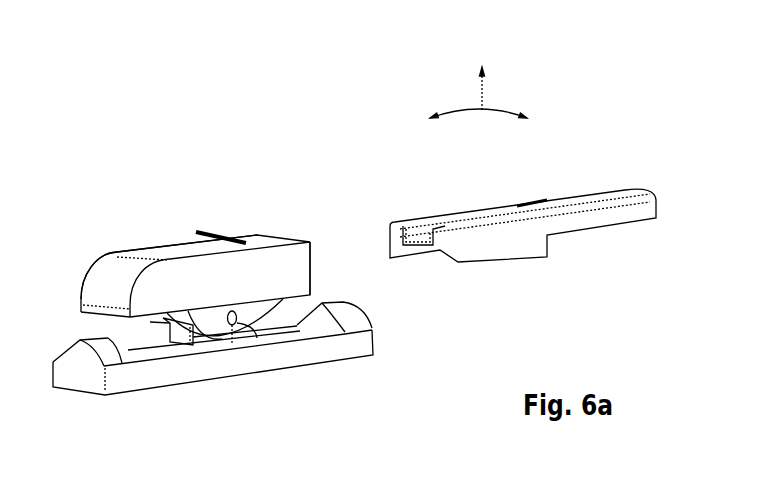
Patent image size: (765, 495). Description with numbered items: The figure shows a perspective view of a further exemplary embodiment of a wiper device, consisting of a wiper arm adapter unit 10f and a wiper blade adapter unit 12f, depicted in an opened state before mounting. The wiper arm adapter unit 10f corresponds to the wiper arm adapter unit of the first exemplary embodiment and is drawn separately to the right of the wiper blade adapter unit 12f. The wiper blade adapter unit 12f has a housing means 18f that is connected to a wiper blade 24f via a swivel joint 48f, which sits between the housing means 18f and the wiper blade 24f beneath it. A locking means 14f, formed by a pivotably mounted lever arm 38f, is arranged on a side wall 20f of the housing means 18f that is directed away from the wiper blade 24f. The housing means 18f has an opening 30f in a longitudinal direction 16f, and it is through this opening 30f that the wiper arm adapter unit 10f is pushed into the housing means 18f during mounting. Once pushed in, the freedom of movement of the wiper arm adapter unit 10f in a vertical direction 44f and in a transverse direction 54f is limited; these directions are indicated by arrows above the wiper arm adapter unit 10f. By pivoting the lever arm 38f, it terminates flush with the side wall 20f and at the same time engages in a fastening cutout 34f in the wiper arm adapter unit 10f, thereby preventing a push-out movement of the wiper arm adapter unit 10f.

The wiper arm adapter unit 10f is at (418, 165).
The wiper blade adapter unit 12f is at (153, 180).
The locking means 14f is at (227, 220).
The longitudinal direction 16f is at (465, 110).
The housing means 18f is at (117, 253).
The side wall 20f is at (187, 242).
The wiper blade 24f is at (112, 357).
The opening 30f is at (312, 267).
The fastening cutout 34f is at (517, 204).
The lever arm 38f is at (207, 230).
The vertical direction 44f is at (480, 108).
The swivel joint 48f is at (257, 336).
The transverse direction 54f is at (497, 112).